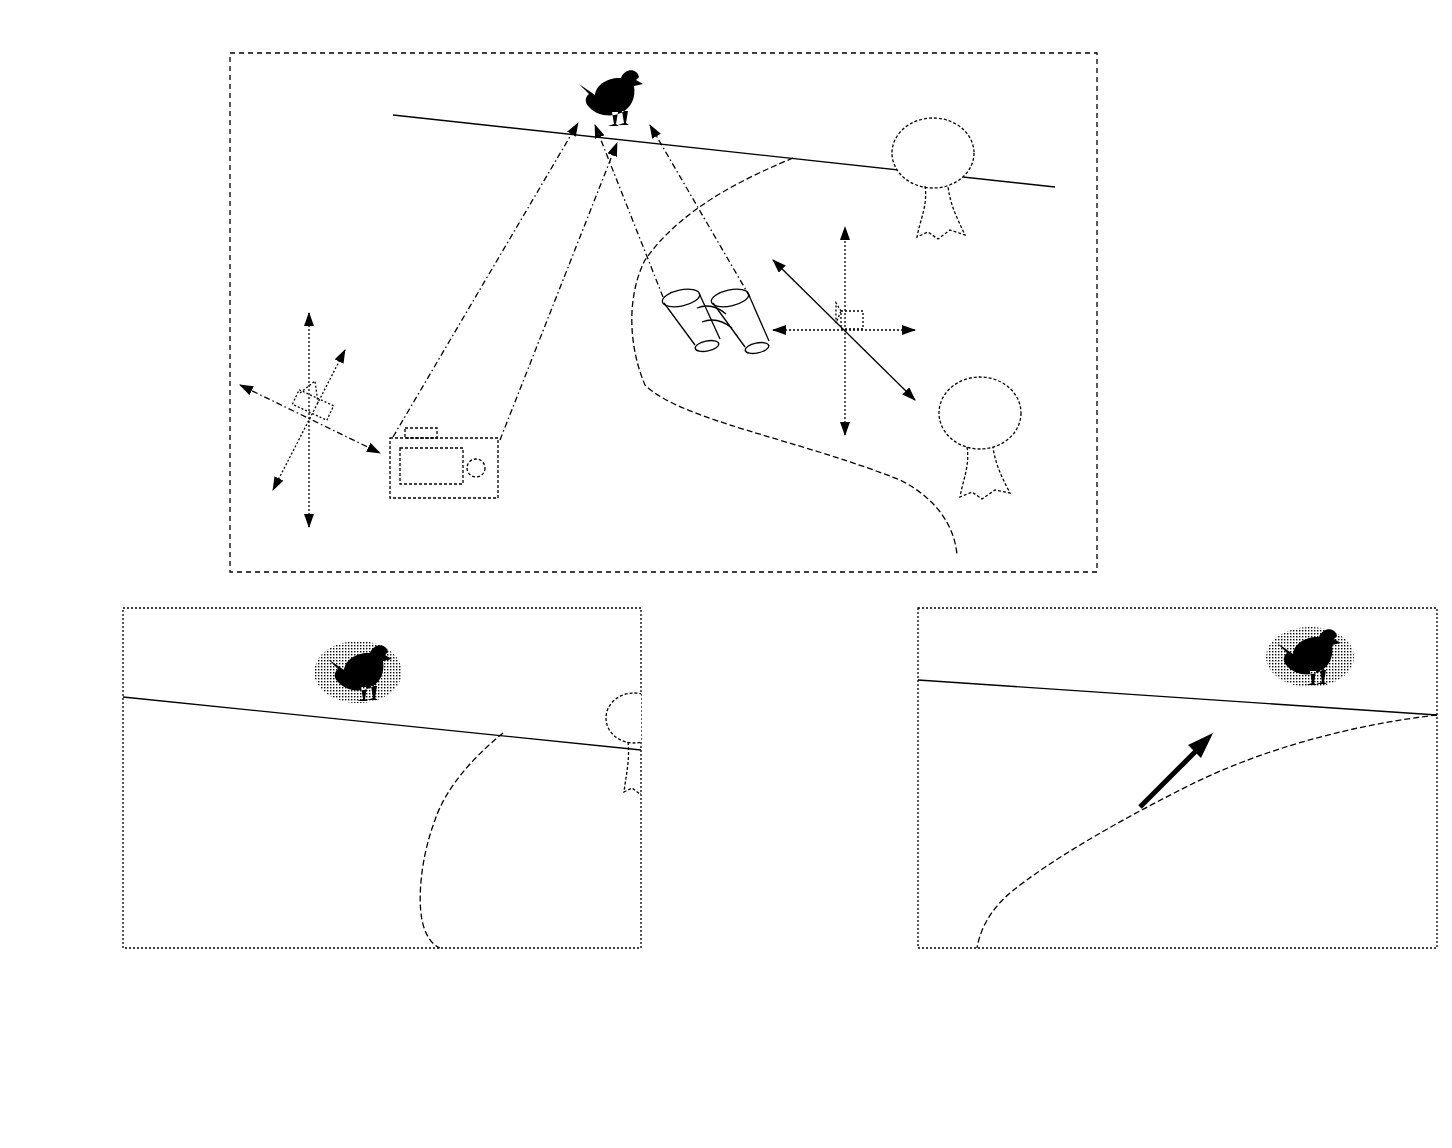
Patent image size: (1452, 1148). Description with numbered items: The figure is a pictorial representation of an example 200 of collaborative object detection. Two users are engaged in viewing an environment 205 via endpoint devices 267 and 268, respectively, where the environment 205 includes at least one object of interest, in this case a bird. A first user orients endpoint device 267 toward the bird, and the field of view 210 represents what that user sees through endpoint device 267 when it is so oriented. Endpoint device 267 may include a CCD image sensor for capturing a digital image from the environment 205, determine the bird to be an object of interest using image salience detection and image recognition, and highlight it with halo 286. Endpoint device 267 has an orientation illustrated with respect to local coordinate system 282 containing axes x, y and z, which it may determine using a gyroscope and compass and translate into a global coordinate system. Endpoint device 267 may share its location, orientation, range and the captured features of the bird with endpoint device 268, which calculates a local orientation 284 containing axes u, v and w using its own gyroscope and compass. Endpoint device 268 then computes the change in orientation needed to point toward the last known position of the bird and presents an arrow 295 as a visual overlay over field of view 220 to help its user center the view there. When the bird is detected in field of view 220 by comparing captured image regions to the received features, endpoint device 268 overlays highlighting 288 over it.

The example 200 is at (122, 91).
The environment 205 is at (304, 99).
The field of view 210 is at (187, 659).
The field of view 220 is at (981, 659).
The endpoint device 267 is at (500, 483).
The endpoint device 268 is at (712, 350).
The local coordinate system 282 is at (278, 368).
The local orientation 284 is at (880, 295).
The halo 286 is at (312, 672).
The highlighting 288 is at (1262, 665).
The arrow 295 is at (1125, 790).